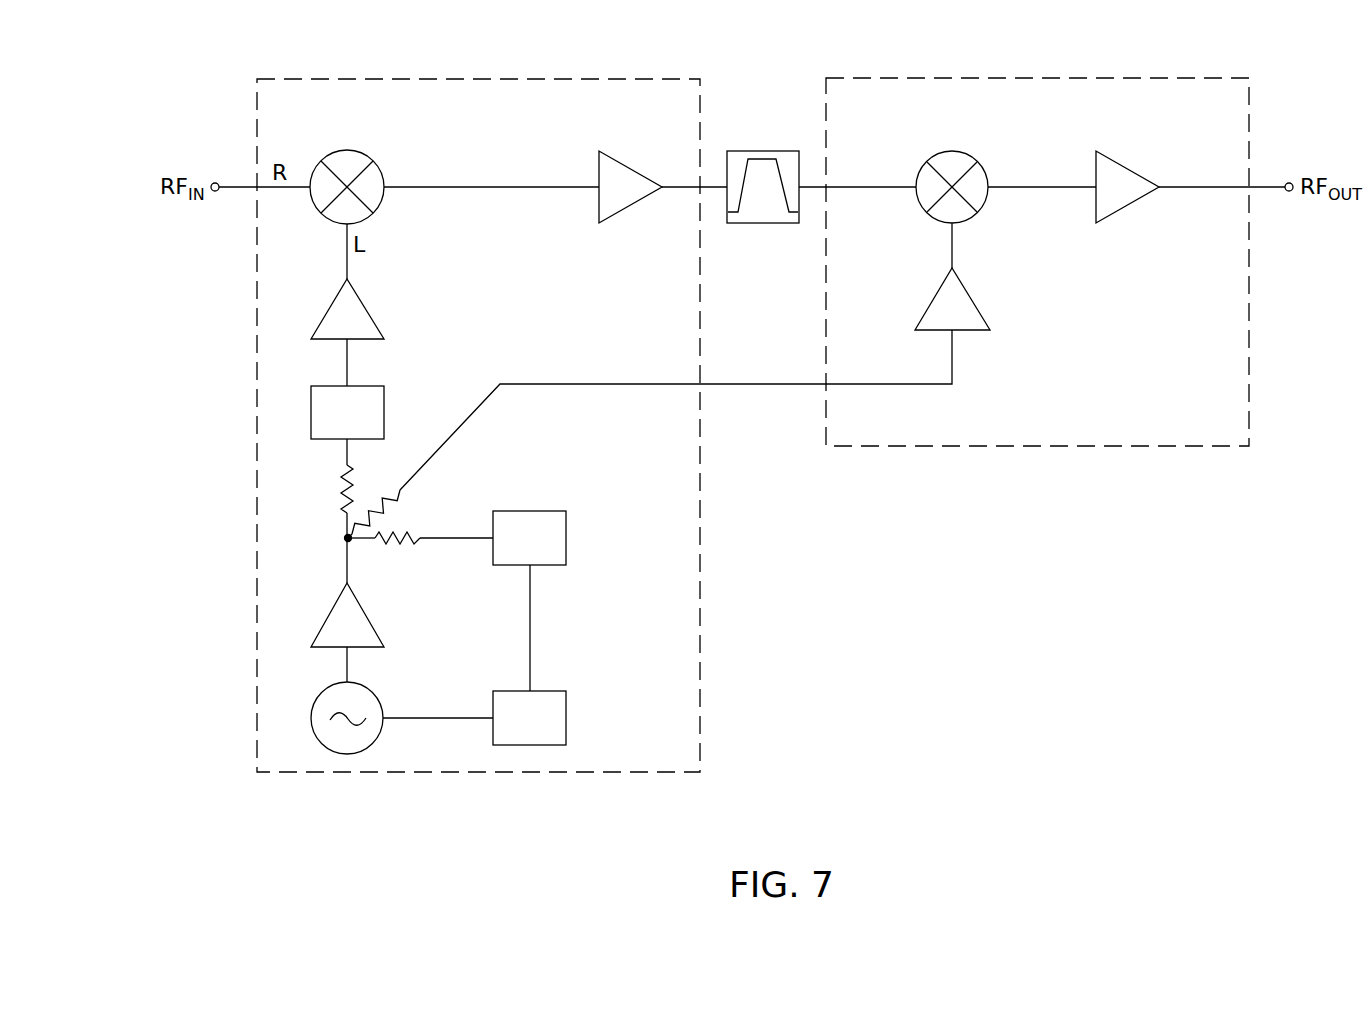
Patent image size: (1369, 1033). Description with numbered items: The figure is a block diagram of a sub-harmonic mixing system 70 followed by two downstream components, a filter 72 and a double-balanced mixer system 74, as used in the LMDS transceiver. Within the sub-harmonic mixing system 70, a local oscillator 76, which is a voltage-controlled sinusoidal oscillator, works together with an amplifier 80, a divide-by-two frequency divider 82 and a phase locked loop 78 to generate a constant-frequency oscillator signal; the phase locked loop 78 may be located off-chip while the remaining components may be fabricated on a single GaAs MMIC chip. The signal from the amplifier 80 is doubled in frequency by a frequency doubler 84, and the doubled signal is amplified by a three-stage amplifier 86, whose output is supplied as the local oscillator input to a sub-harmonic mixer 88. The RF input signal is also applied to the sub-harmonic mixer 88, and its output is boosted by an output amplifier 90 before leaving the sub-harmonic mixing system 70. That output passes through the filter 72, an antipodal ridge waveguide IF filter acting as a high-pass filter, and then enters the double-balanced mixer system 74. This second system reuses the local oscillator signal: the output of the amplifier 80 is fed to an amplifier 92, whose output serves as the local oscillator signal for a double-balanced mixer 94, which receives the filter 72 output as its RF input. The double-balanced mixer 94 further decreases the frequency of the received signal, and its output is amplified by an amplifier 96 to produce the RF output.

The sub-harmonic mixing system 70 is at (581, 80).
The filter 72 is at (778, 151).
The double-balanced mixer system 74 is at (1158, 78).
The local oscillator 76 is at (378, 740).
The phase locked loop 78 is at (566, 700).
The amplifier 80 is at (362, 642).
The frequency divider 82 is at (544, 550).
The frequency doubler 84 is at (384, 394).
The amplifier 86 is at (362, 334).
The sub-harmonic mixer 88 is at (378, 166).
The output amplifier 90 is at (637, 200).
The amplifier 92 is at (967, 322).
The double-balanced mixer 94 is at (966, 157).
The amplifier 96 is at (1134, 200).